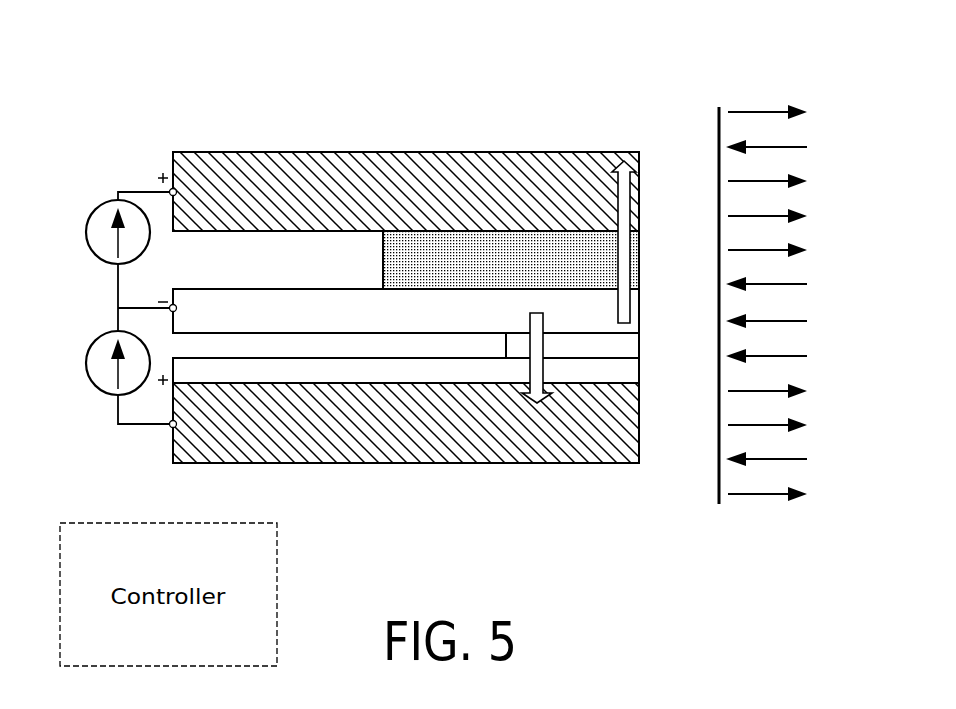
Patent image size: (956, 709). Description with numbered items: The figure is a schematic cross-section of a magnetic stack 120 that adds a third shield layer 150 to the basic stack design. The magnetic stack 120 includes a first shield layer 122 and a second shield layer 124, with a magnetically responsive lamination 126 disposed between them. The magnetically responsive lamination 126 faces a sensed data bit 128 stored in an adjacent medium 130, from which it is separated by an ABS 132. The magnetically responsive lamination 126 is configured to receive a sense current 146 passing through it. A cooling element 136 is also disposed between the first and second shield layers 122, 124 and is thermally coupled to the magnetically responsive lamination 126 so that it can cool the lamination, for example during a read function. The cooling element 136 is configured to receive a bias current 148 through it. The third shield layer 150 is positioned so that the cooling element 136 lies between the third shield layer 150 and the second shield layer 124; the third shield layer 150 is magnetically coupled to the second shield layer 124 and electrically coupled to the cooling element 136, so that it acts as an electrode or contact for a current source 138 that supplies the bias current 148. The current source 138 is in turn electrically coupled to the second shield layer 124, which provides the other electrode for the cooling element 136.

The magnetic stack 120 is at (349, 122).
The first shield layer 122 is at (548, 464).
The second shield layer 124 is at (430, 152).
The magnetically responsive lamination 126 is at (504, 350).
The sensed data bit 128 is at (766, 495).
The medium 130 is at (757, 97).
The ABS 132 is at (693, 442).
The cooling element 136 is at (511, 260).
The current source 138 is at (101, 204).
The sense current 146 is at (555, 312).
The bias current 148 is at (640, 197).
The third shield layer 150 is at (406, 311).